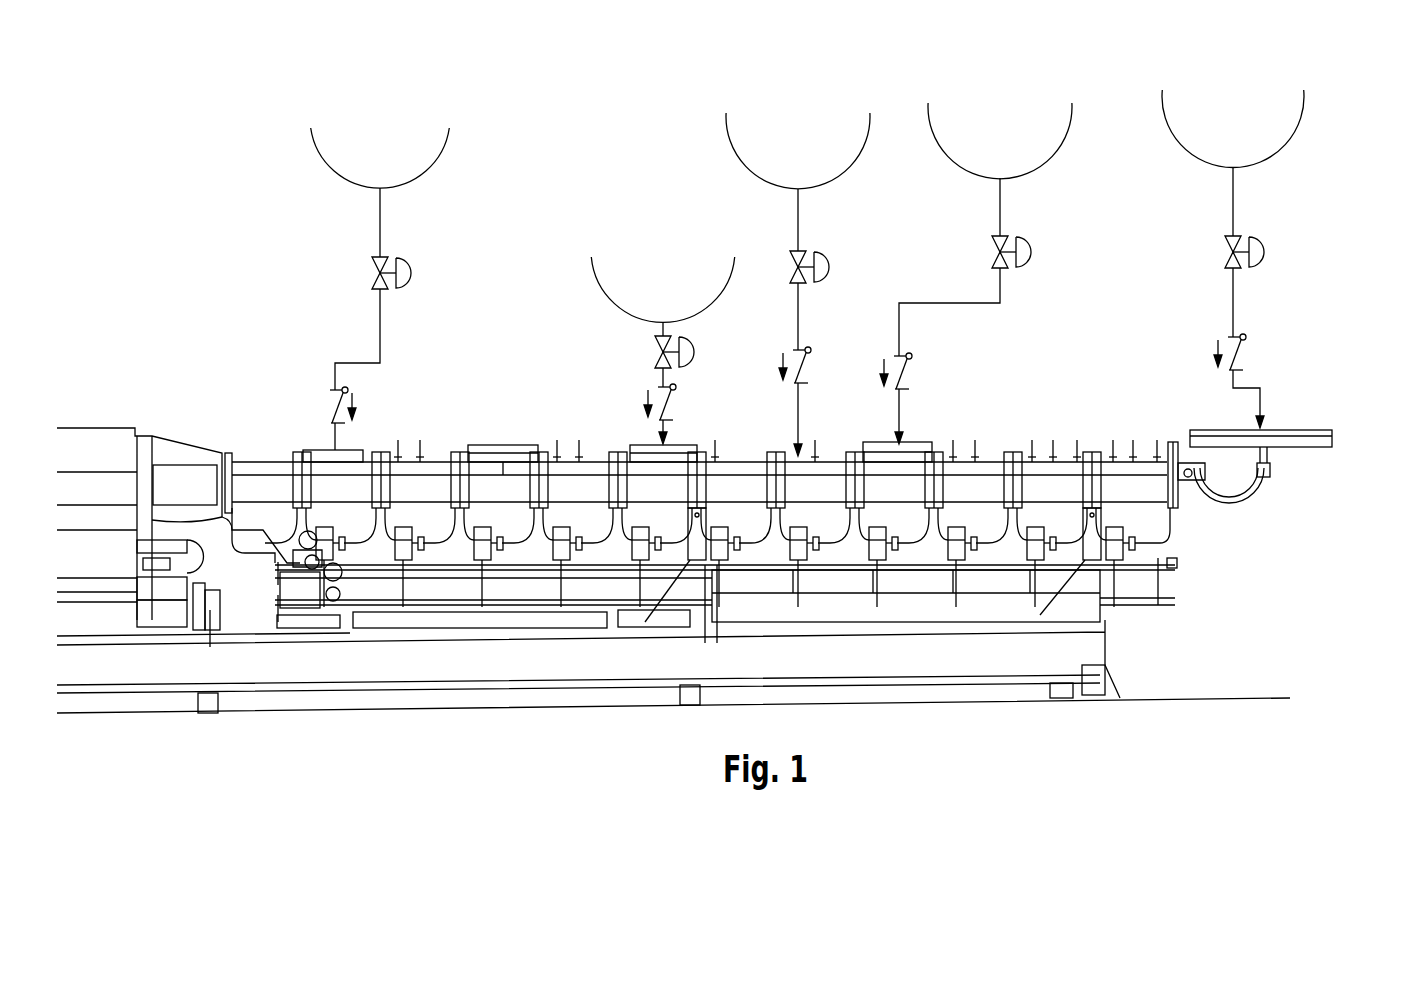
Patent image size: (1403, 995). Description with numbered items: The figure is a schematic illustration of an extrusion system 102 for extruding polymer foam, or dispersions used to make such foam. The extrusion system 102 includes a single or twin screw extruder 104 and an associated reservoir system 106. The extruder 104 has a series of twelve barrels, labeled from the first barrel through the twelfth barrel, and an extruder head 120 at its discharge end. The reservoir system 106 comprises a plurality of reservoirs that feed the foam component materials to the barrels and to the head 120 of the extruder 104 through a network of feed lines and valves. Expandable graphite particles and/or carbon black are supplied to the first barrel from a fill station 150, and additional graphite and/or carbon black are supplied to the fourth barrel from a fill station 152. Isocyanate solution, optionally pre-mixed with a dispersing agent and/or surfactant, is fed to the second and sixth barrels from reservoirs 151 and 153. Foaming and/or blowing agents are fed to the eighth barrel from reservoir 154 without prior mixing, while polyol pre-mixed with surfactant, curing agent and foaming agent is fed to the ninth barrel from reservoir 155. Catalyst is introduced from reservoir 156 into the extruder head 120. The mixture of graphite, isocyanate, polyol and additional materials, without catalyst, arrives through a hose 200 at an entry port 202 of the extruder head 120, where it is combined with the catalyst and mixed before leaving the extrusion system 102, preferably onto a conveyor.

The extruder system 102 is at (1308, 568).
The extruder 104 is at (933, 423).
The reservoir system 106 is at (218, 190).
The extruder head 120 is at (1309, 496).
The fill station 150 is at (262, 462).
The reservoir 151 is at (437, 156).
The fill station 152 is at (503, 430).
The reservoir 153 is at (719, 298).
The reservoir 154 is at (866, 142).
The reservoir 155 is at (1067, 133).
The reservoir 156 is at (1293, 136).
The hose 200 is at (1246, 518).
The entry port 202 is at (1288, 466).